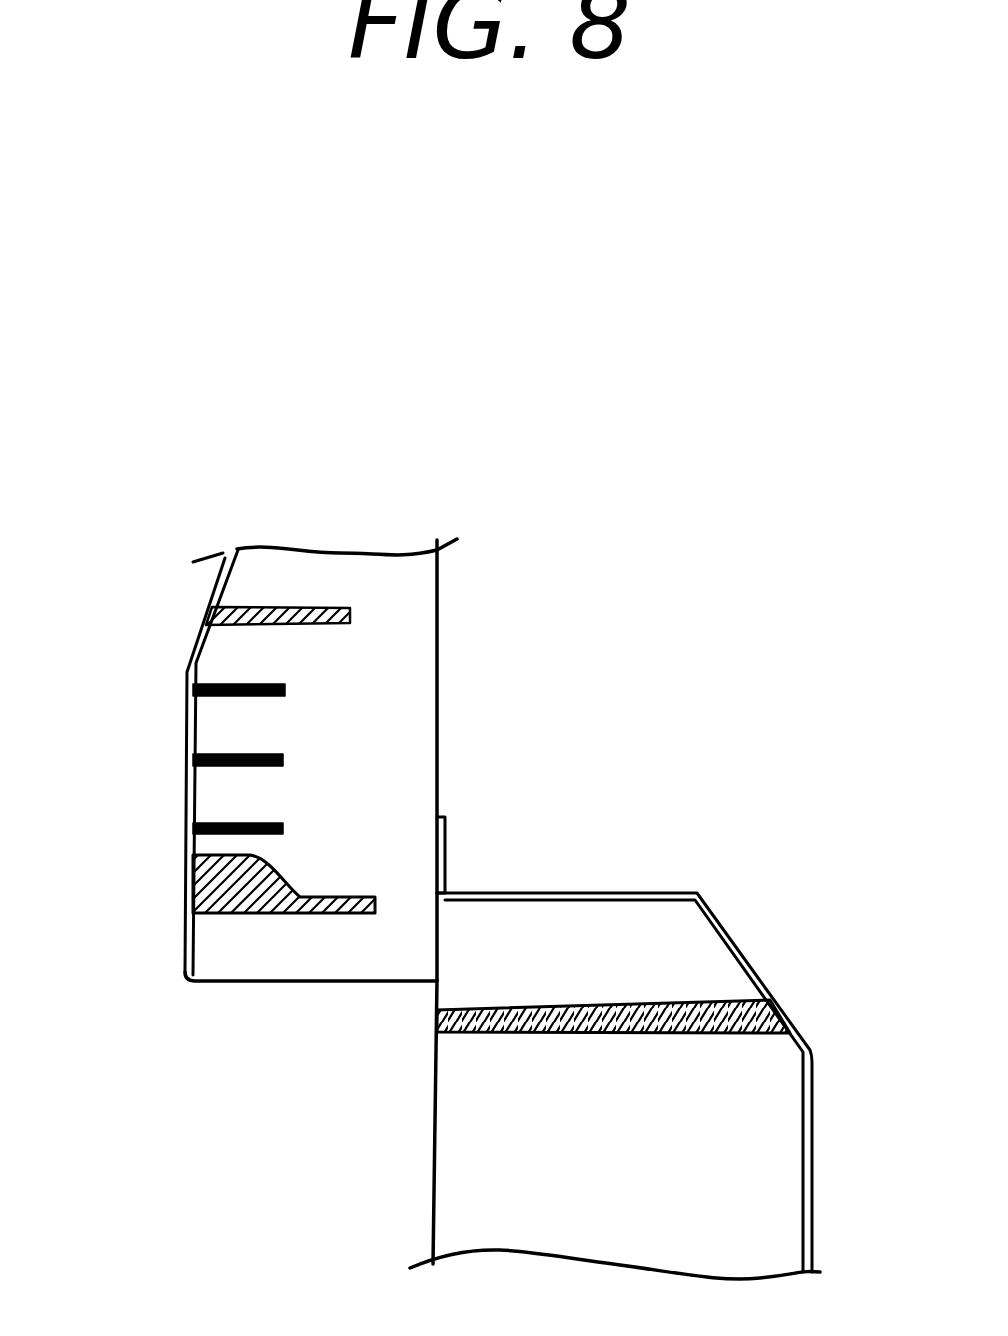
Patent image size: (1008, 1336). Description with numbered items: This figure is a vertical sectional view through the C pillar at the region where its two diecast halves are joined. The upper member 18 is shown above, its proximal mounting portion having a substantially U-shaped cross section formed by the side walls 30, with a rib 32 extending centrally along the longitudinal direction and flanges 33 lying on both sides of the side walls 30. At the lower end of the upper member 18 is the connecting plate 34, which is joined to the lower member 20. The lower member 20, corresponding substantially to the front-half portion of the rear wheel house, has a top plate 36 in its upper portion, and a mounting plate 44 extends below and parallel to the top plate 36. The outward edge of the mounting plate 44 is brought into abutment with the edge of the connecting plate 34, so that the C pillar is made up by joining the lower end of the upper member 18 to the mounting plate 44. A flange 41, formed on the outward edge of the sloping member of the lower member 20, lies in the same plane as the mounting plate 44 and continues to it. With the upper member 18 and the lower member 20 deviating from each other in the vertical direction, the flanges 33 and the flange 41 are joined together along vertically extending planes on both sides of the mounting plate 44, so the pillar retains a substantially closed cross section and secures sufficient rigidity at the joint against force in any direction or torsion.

The upper member 18 is at (402, 611).
The lower member 20 is at (490, 1185).
The side walls 30 is at (365, 718).
The rib 32 is at (185, 883).
The flanges 33 is at (438, 807).
The connecting plate 34 is at (217, 983).
The top plate 36 is at (664, 893).
The flange 41 is at (433, 1107).
The mounting plate 44 is at (679, 1003).